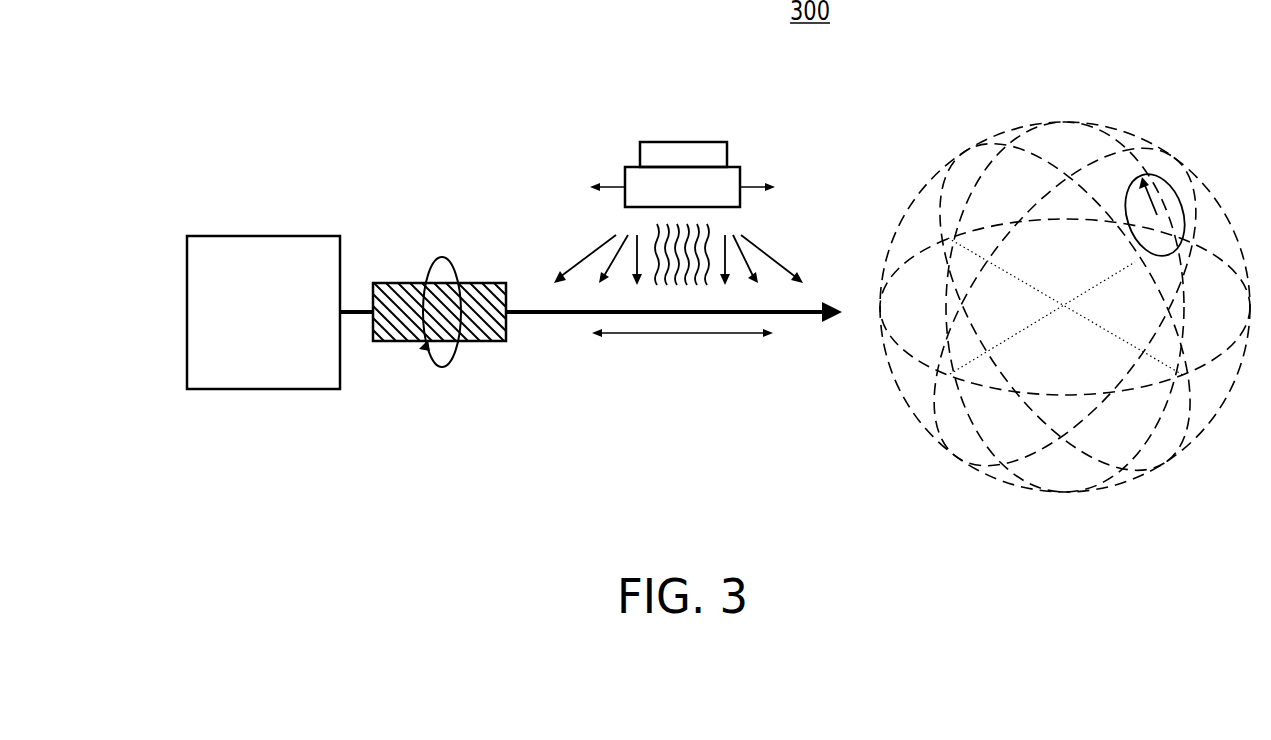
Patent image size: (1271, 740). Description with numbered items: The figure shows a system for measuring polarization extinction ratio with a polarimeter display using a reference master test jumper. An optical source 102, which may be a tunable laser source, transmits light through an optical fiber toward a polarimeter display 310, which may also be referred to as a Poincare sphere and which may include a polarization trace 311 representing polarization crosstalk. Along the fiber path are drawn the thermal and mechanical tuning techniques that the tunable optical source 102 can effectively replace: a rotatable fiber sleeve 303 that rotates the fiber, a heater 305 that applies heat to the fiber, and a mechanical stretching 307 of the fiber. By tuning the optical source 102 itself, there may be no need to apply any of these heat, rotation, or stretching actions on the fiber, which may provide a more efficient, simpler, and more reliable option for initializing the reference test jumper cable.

The optical source 102 is at (237, 236).
The rotatable fiber sleeve 303 is at (405, 284).
The heater 305 is at (640, 166).
The mechanical stretching 307 is at (673, 335).
The polarimeter display 310 is at (965, 152).
The polarization trace 311 is at (1180, 198).